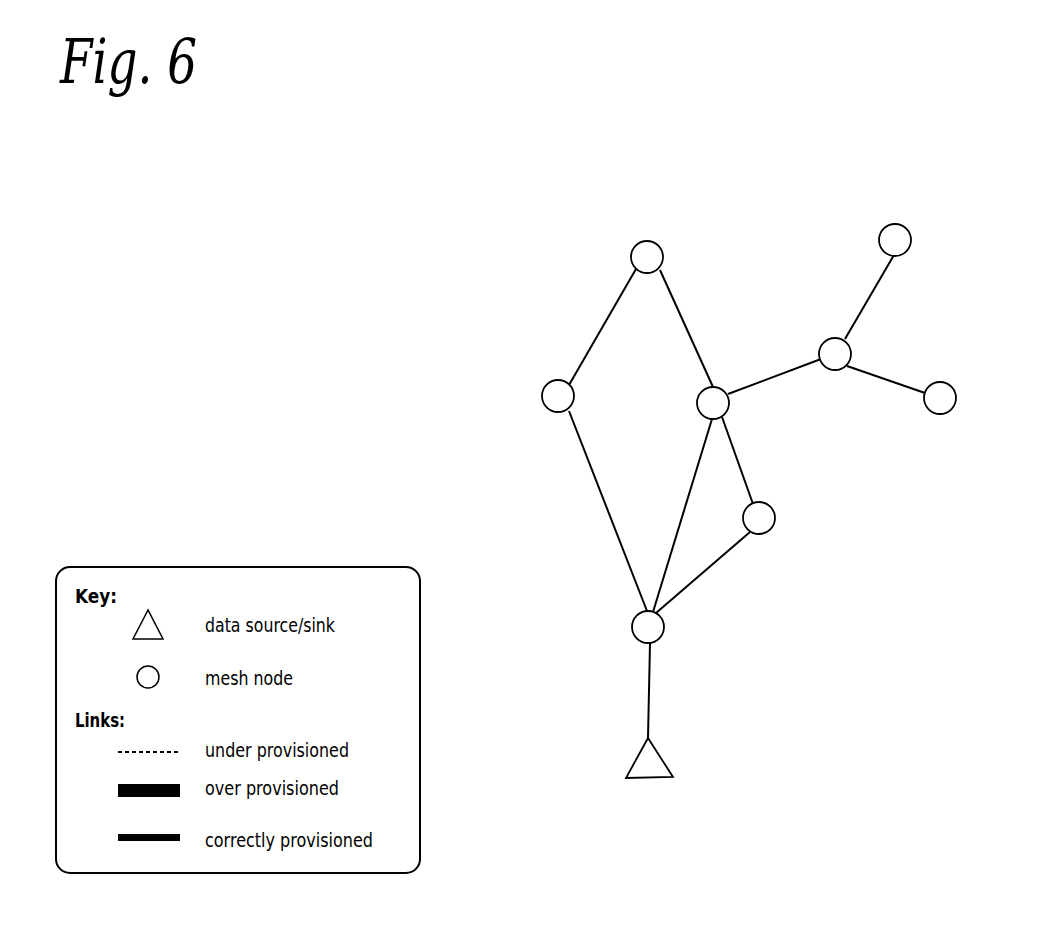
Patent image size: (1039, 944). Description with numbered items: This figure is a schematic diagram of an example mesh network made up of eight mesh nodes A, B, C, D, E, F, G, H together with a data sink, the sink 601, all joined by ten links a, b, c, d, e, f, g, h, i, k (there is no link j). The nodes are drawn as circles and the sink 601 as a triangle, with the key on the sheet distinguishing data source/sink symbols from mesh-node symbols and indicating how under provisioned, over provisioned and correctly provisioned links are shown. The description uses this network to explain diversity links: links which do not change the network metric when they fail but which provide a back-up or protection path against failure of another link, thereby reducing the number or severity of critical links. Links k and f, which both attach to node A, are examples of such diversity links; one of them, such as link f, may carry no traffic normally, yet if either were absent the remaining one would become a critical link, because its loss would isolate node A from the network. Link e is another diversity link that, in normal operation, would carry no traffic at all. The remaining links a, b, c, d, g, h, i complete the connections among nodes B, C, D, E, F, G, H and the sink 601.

The sink 601 is at (651, 788).
The node A is at (647, 240).
The node B is at (543, 396).
The node C is at (705, 403).
The node D is at (775, 522).
The node E is at (634, 627).
The node F is at (835, 375).
The node G is at (895, 221).
The node H is at (955, 397).
The link a is at (660, 690).
The link b is at (608, 511).
The link c is at (682, 515).
The link d is at (703, 572).
The link e is at (741, 460).
The link f is at (686, 328).
The link g is at (774, 368).
The link h is at (871, 297).
The link i is at (886, 369).
The link k is at (602, 327).